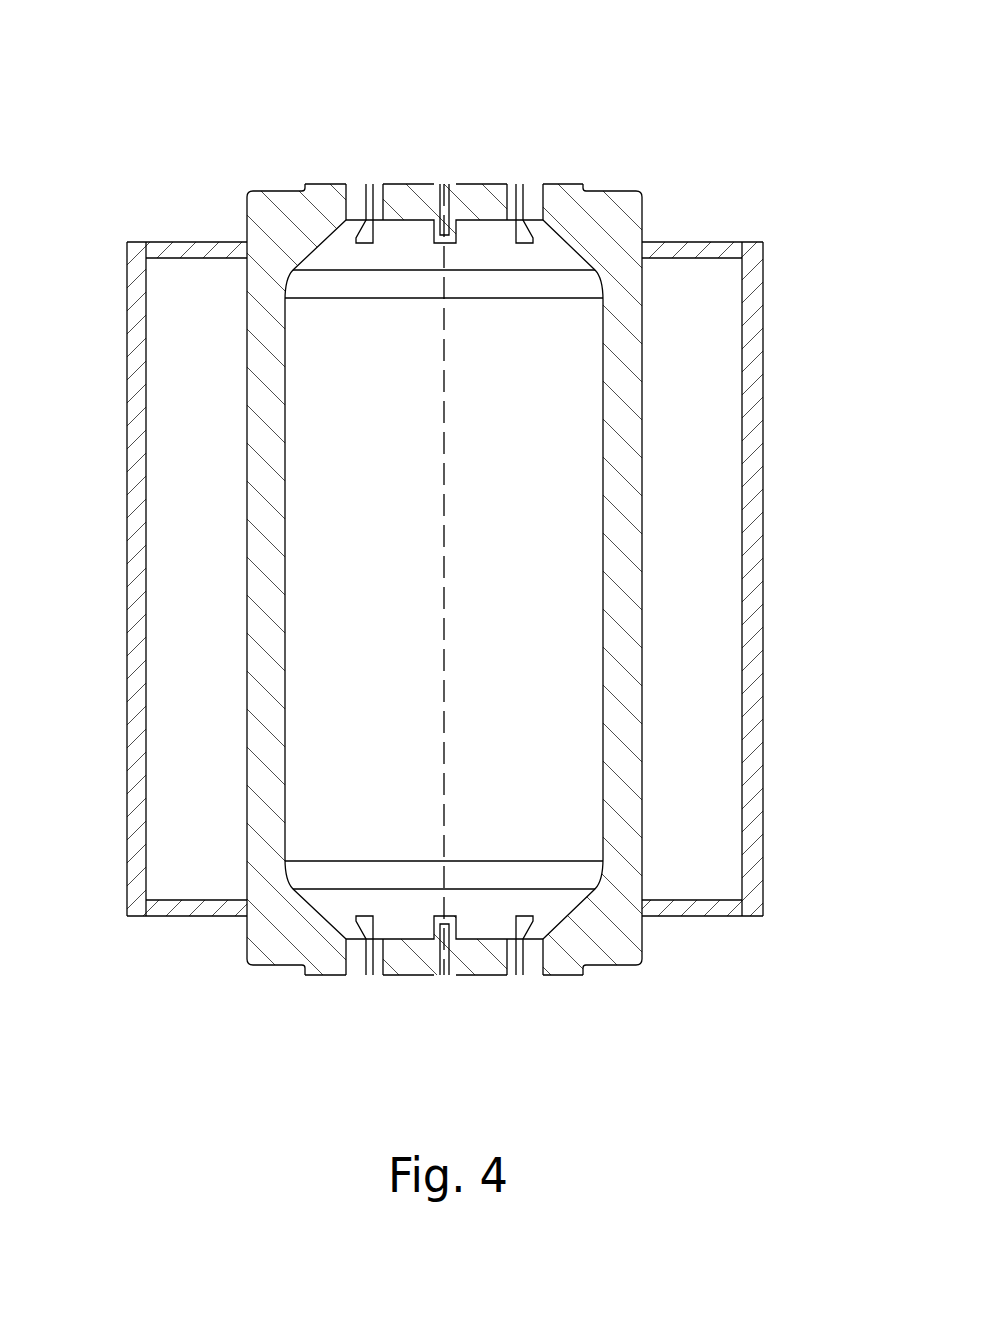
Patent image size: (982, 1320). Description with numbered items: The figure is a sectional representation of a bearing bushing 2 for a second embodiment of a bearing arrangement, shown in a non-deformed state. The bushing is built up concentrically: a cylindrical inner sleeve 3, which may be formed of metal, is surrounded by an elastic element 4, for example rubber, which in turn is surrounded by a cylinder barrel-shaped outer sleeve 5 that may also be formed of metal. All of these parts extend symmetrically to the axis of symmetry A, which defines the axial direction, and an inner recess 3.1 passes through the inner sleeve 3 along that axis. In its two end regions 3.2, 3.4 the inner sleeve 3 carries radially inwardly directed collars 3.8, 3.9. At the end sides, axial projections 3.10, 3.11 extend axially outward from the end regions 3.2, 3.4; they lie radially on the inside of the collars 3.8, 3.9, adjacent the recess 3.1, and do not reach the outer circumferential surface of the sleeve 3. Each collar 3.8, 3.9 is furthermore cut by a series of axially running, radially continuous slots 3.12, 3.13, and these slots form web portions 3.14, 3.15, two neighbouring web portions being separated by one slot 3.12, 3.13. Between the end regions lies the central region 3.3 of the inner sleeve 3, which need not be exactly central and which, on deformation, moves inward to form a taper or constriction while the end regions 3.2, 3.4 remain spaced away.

The bearing bushing 2 is at (748, 183).
The inner sleeve 3 is at (372, 488).
The recess 3.1 is at (548, 846).
The end region 3.2 is at (242, 190).
The central region 3.3 is at (236, 383).
The end region 3.4 is at (241, 932).
The collar 3.8 is at (316, 282).
The collar 3.9 is at (322, 890).
The axial projection 3.10 is at (305, 182).
The axial projection 3.11 is at (305, 977).
The slot 3.12 is at (367, 183).
The slot 3.13 is at (373, 976).
The web portion 3.14 is at (346, 183).
The web portion 3.15 is at (352, 976).
The elastic element 4 is at (203, 525).
The outer sleeve 5 is at (763, 517).
The axis of symmetry A is at (447, 500).